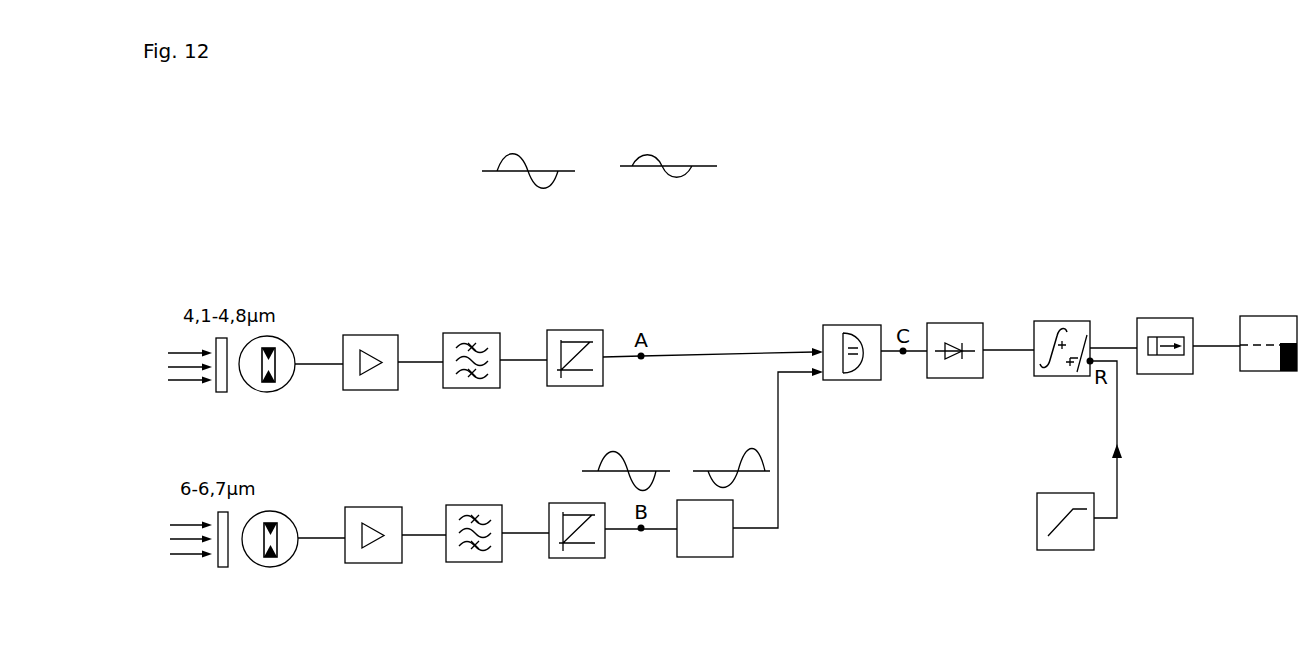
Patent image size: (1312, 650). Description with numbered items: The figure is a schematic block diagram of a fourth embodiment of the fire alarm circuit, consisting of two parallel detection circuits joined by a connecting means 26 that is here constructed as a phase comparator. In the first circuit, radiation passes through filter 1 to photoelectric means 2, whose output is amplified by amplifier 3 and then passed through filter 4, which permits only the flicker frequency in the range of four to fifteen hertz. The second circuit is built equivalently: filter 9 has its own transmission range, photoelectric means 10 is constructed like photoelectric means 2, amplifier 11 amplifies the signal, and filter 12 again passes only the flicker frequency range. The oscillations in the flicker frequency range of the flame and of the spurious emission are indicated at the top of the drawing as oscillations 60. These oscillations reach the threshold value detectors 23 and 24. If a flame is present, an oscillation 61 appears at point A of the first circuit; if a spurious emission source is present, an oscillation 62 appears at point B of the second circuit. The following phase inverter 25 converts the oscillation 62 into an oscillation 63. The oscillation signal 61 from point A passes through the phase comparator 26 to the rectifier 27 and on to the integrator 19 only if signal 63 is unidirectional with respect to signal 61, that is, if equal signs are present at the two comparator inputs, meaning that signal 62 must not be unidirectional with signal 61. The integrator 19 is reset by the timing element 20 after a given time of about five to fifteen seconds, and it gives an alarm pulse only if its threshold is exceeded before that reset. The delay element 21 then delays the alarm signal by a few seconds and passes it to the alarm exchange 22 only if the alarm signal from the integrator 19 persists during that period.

The filter 1 is at (197, 379).
The photoelectric means 2 is at (267, 378).
The amplifier 3 is at (370, 378).
The filter 4 is at (471, 376).
The threshold value detector 23 is at (575, 374).
The connecting means 26 is at (852, 368).
The rectifier 27 is at (955, 366).
The integrator 19 is at (1062, 364).
The delay element 21 is at (1165, 362).
The alarm exchange 22 is at (1268, 360).
The timing element 20 is at (1079, 455).
The filter 9 is at (199, 555).
The photoelectric means 10 is at (270, 555).
The amplifier 11 is at (373, 552).
The filter 12 is at (474, 550).
The threshold value detector 24 is at (577, 548).
The phase inverter 25 is at (745, 482).
The oscillations 60 is at (528, 153).
The oscillation 61 is at (668, 147).
The oscillation 62 is at (626, 459).
The oscillation 63 is at (731, 456).